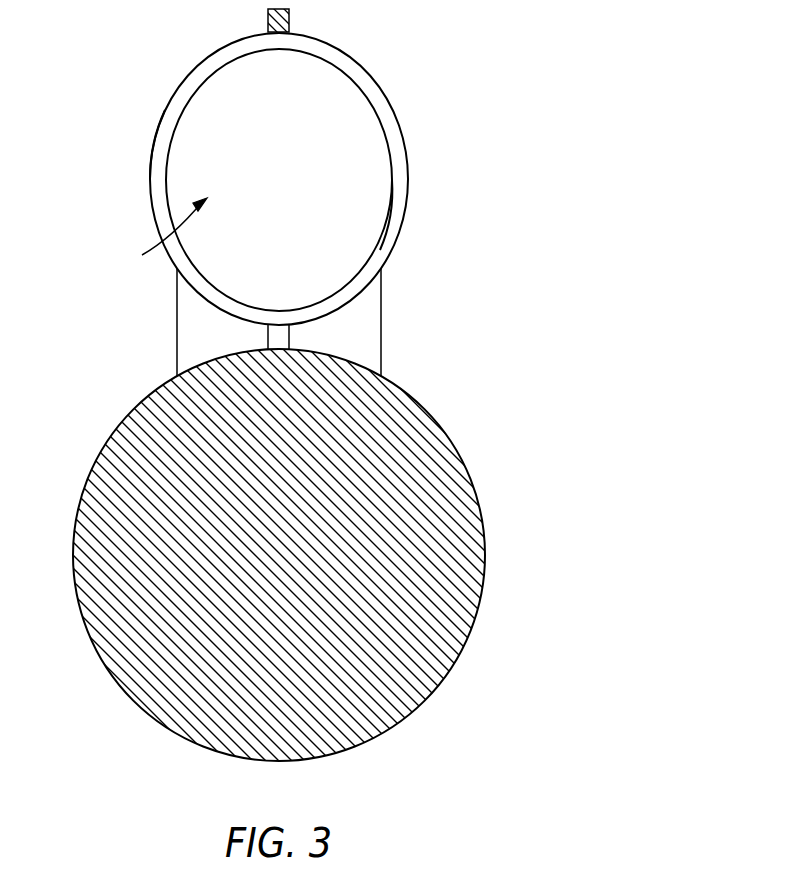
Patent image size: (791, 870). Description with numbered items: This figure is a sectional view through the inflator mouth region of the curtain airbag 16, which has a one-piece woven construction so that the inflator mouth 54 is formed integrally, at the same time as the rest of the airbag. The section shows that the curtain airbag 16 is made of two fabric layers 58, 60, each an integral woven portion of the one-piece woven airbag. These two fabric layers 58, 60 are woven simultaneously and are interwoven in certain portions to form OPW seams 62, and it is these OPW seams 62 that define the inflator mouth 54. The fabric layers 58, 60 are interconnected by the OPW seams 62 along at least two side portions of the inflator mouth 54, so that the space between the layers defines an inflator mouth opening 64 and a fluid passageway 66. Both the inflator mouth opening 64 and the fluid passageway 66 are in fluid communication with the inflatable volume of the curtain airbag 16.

The curtain airbag 16 is at (92, 490).
The inflator mouth 54 is at (375, 98).
The fabric layer 58 is at (160, 148).
The fabric layer 60 is at (398, 182).
The OPW seams 62 is at (290, 13).
The inflator mouth opening 64 is at (385, 227).
The fluid passageway 66 is at (157, 237).